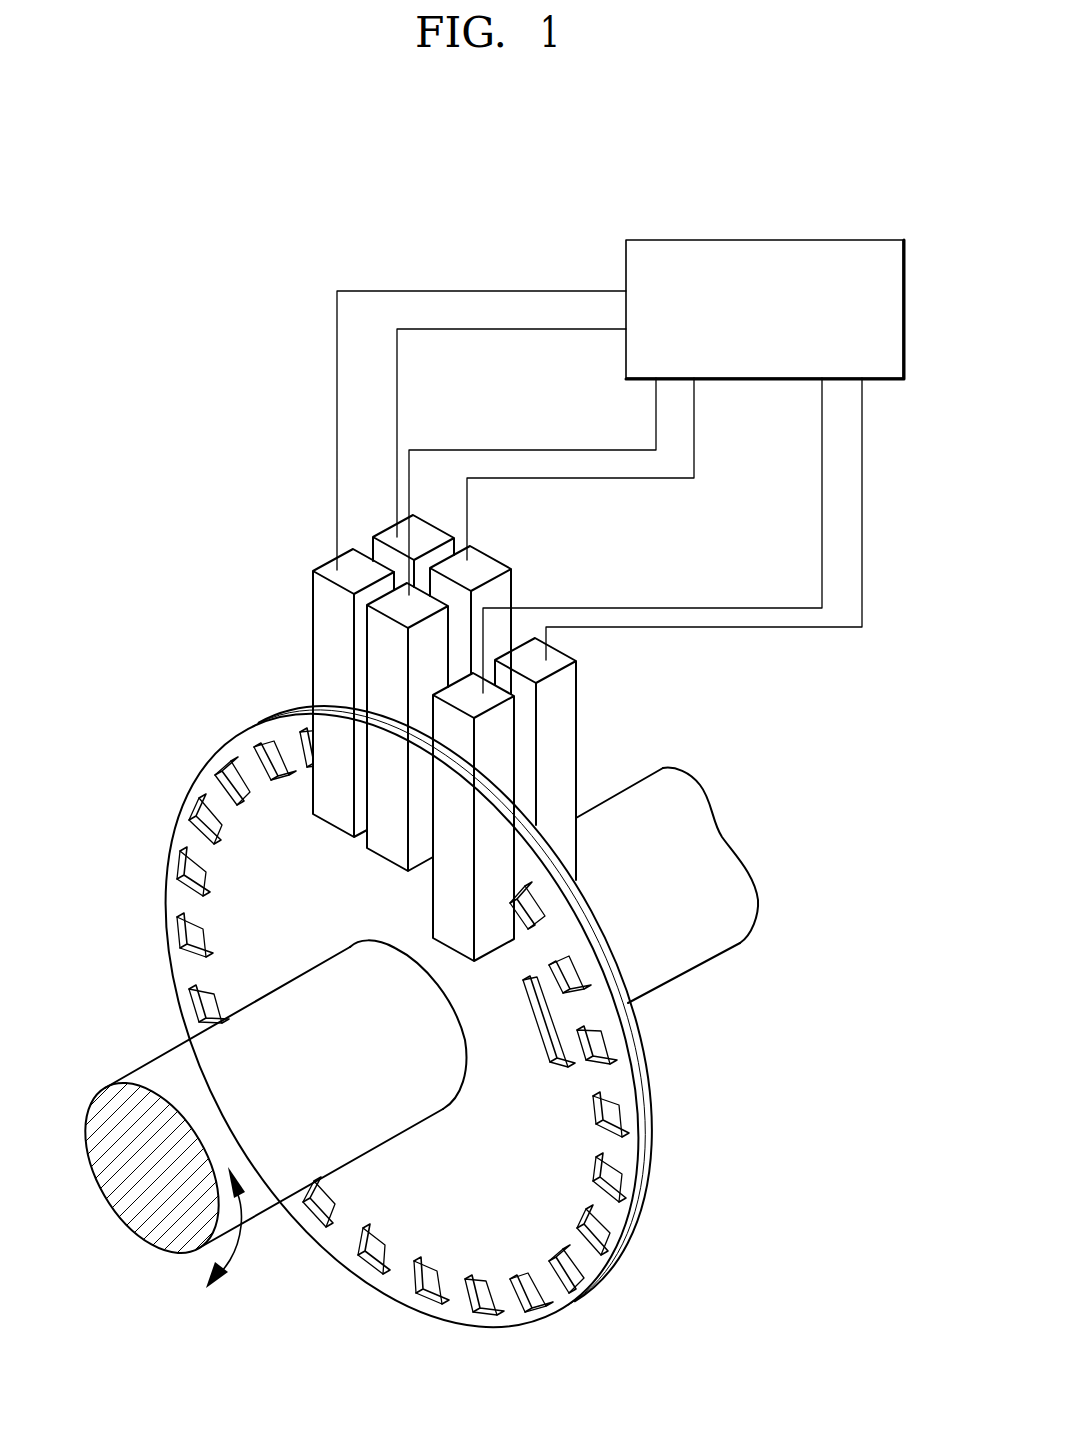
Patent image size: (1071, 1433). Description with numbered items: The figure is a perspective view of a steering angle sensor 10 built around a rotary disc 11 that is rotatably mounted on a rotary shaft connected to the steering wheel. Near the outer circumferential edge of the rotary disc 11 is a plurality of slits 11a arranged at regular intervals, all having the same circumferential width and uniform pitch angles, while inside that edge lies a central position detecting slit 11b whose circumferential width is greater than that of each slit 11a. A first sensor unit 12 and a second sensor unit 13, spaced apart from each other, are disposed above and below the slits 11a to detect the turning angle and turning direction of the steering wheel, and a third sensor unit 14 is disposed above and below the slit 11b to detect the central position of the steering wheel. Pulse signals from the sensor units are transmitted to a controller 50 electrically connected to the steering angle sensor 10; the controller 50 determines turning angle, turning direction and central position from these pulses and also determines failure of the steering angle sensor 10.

The steering angle sensor 10 is at (246, 484).
The rotary disc 11 is at (202, 780).
The slits 11a is at (255, 760).
The central position detecting slit 11b is at (567, 1050).
The first sensor unit 12 is at (389, 535).
The second sensor unit 13 is at (425, 607).
The third sensor unit 14 is at (493, 732).
The controller 50 is at (755, 240).